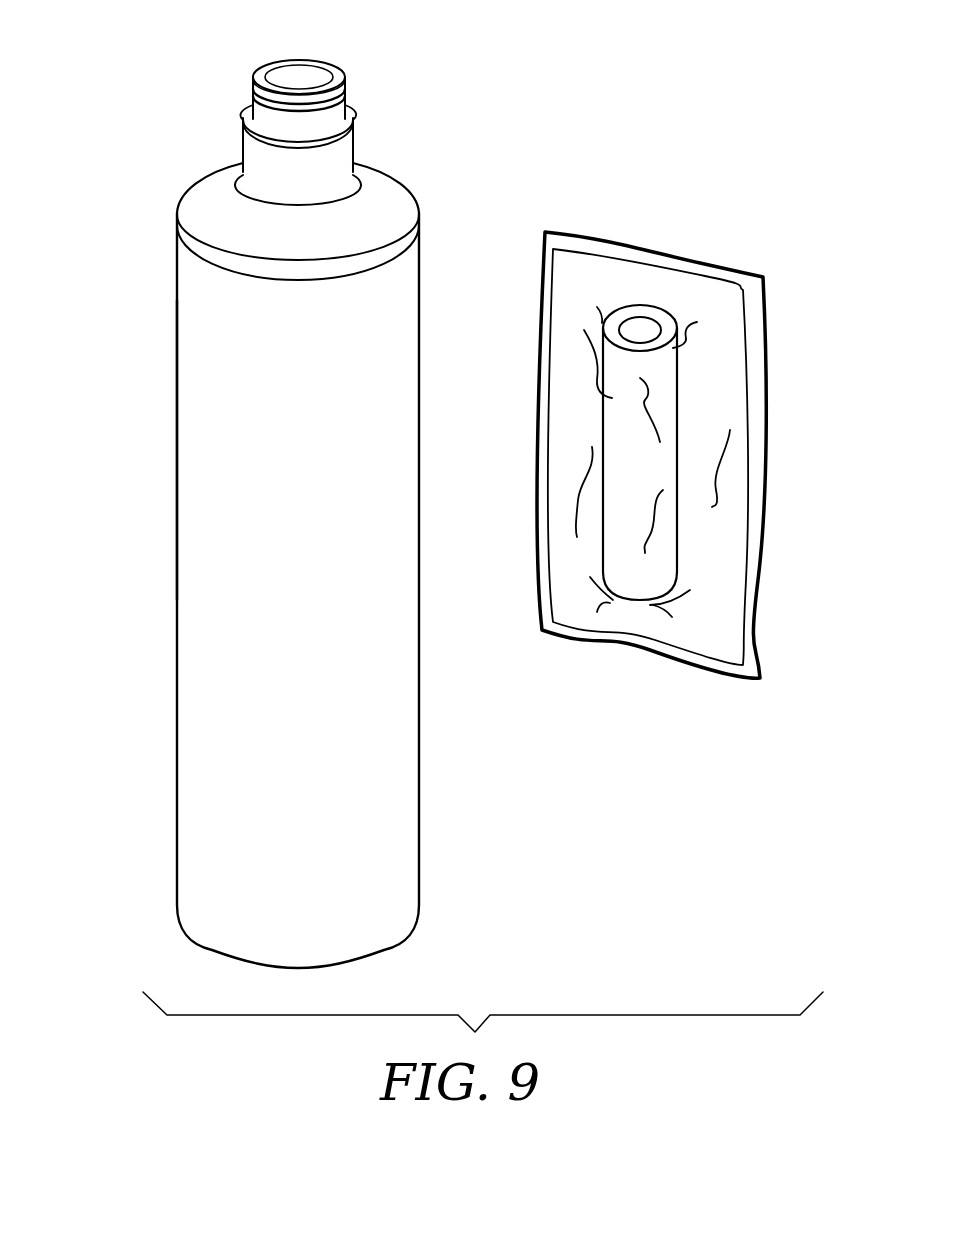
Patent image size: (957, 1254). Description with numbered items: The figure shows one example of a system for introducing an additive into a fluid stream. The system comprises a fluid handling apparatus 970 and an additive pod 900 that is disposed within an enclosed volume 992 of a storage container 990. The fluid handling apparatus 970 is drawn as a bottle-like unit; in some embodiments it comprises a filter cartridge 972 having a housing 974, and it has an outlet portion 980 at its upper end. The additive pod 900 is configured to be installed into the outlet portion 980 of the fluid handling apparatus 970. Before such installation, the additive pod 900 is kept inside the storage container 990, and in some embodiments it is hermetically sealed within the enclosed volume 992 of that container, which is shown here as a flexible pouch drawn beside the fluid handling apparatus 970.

The fluid handling apparatus 970 is at (152, 114).
The outlet portion 980 is at (293, 72).
The housing 974 is at (177, 418).
The filter cartridge 972 is at (207, 500).
The storage container 990 is at (618, 246).
The enclosed volume 992 is at (675, 293).
The additive pod 900 is at (667, 380).